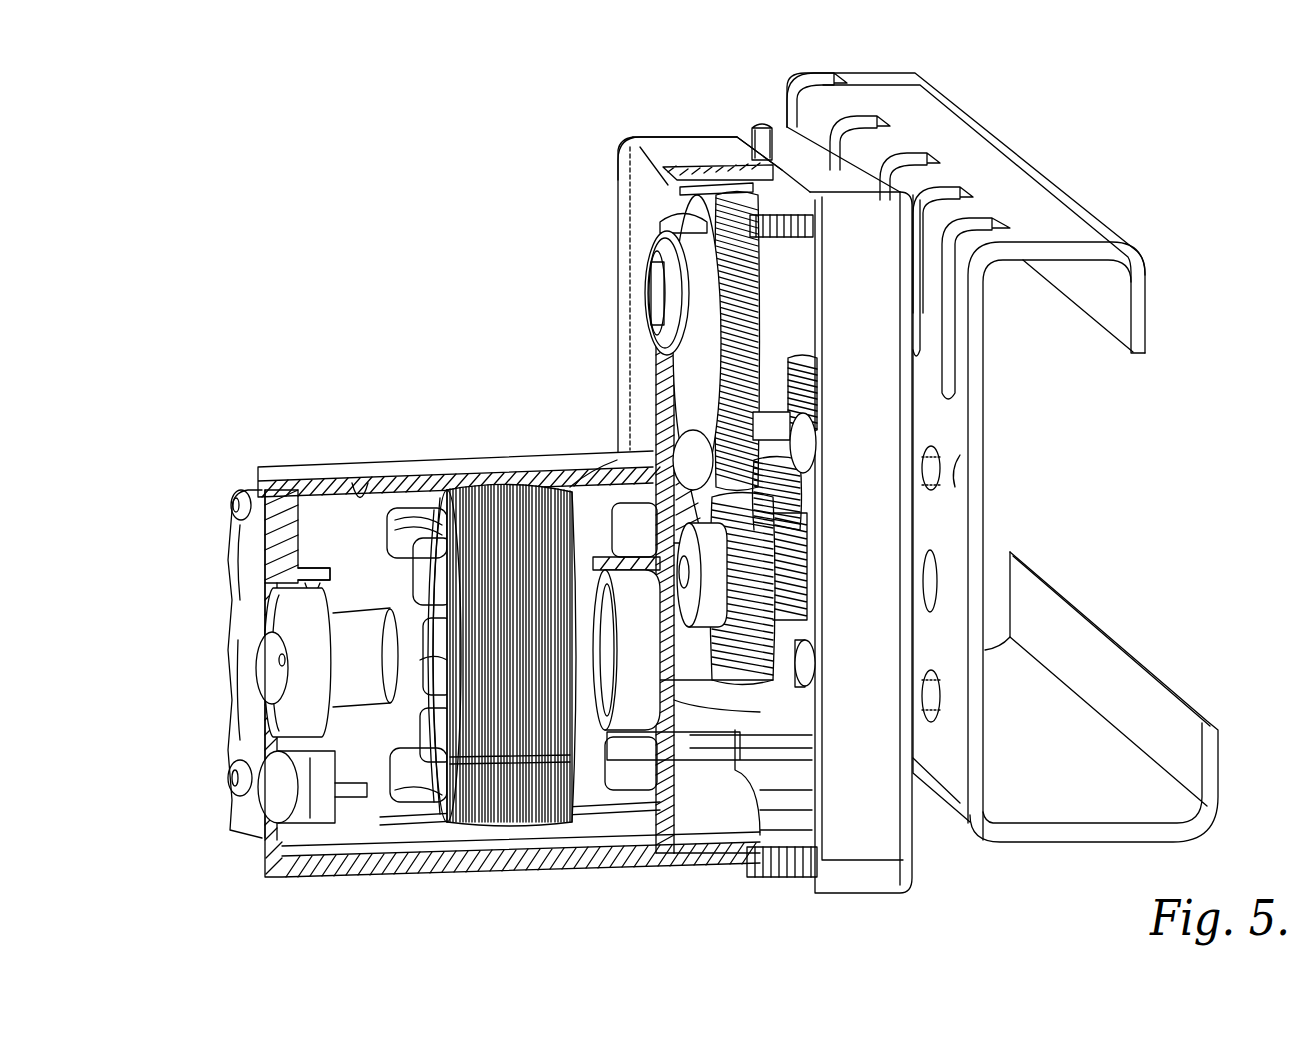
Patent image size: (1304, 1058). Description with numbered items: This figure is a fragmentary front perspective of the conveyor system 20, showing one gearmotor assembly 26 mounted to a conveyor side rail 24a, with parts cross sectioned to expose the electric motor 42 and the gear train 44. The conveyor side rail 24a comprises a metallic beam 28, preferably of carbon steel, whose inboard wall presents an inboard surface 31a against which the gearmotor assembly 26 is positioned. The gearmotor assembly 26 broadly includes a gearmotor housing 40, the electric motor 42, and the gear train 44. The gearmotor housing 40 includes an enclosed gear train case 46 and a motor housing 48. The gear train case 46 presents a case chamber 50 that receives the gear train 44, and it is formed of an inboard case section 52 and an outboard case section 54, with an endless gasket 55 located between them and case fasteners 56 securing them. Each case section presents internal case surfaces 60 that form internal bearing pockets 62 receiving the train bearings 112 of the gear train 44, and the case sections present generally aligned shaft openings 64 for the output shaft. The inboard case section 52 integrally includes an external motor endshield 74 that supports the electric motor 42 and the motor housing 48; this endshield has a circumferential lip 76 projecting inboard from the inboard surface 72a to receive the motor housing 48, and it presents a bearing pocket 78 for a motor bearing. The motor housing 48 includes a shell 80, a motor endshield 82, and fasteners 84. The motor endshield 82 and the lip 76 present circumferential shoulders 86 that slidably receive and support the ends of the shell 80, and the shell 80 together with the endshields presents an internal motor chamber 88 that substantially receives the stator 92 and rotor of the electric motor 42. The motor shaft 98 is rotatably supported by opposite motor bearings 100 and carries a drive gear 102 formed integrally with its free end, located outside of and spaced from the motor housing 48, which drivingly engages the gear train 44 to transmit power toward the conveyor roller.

The conveyor system 20 is at (288, 207).
The conveyor side rail 24a is at (1060, 203).
The gearmotor assembly 26 is at (880, 870).
The metallic beam 28 is at (1190, 748).
The inboard surface 31a is at (953, 487).
The gearmotor housing 40 is at (627, 183).
The electric motor 42 is at (450, 490).
The gear train 44 is at (730, 190).
The gear train case 46 is at (632, 147).
The motor housing 48 is at (315, 868).
The case chamber 50 is at (703, 840).
The inboard case section 52 is at (688, 138).
The outboard case section 54 is at (813, 140).
The endless gasket 55 is at (756, 130).
The case fasteners 56 is at (813, 232).
The internal case surfaces 60 is at (720, 780).
The internal bearing pockets 62 is at (687, 220).
The shaft openings 64 is at (647, 277).
The inboard surface 72a is at (627, 167).
The motor endshield 74 is at (658, 823).
The circumferential lip 76 is at (570, 487).
The bearing pocket 78 is at (310, 607).
The shell 80 is at (318, 467).
The motor endshield 82 is at (242, 585).
The fasteners 84 is at (230, 497).
The circumferential shoulders 86 is at (617, 503).
The internal motor chamber 88 is at (360, 507).
The stator 92 is at (455, 823).
The motor shaft 98 is at (357, 633).
The motor bearings 100 is at (317, 698).
The drive gear 102 is at (767, 663).
The train bearings 112 is at (690, 316).